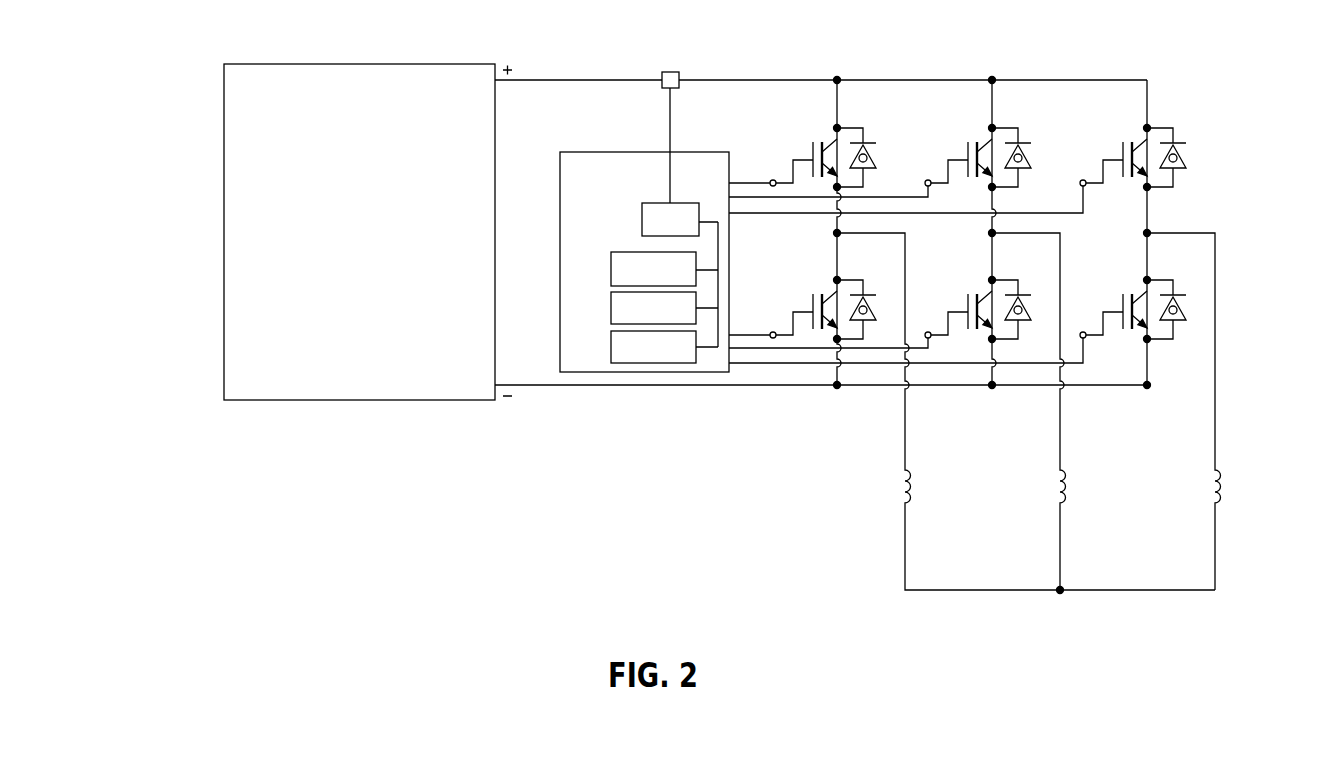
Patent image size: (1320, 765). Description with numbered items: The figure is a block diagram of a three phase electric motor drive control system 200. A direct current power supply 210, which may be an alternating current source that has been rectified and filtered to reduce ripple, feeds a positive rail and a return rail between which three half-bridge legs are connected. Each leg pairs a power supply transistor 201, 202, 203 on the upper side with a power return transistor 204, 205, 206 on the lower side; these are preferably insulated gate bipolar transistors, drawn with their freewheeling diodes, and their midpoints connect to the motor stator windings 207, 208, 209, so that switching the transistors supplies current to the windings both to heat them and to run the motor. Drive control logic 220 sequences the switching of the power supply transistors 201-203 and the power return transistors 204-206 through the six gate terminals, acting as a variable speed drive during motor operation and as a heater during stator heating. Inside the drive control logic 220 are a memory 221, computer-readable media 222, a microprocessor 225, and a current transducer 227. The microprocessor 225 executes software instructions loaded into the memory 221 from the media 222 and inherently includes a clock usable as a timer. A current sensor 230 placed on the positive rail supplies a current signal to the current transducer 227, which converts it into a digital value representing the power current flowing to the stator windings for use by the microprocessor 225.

The electric motor drive control system 200 is at (433, 477).
The direct current power supply 210 is at (251, 63).
The drive control logic 220 is at (622, 150).
The memory 221 is at (610, 262).
The computer-readable media 222 is at (610, 303).
The microprocessor 225 is at (610, 347).
The current transducer 227 is at (688, 203).
The current sensor 230 is at (663, 72).
The power supply transistor 201 is at (832, 142).
The power supply transistor 202 is at (987, 142).
The power supply transistor 203 is at (1142, 142).
The power return transistor 204 is at (832, 294).
The power return transistor 205 is at (987, 294).
The power return transistor 206 is at (1142, 294).
The stator winding 207 is at (898, 471).
The stator winding 208 is at (1053, 471).
The stator winding 209 is at (1208, 471).